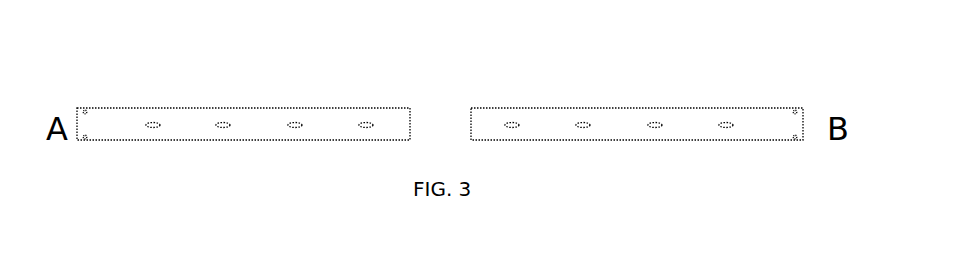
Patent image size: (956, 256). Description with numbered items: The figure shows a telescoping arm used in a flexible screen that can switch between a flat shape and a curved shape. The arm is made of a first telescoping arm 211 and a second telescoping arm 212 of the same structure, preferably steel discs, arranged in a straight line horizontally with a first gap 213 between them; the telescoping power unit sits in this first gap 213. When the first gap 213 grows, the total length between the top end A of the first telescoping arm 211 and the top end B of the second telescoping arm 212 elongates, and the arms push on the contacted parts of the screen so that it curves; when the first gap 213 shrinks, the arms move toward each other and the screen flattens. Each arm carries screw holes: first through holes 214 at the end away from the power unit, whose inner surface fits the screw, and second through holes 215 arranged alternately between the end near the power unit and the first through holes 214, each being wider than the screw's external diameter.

The first telescoping arm 211 is at (243, 96).
The second through holes 215 is at (260, 91).
The first gap 213 is at (461, 88).
The second telescoping arm 212 is at (637, 97).
The first through holes 214 is at (826, 100).